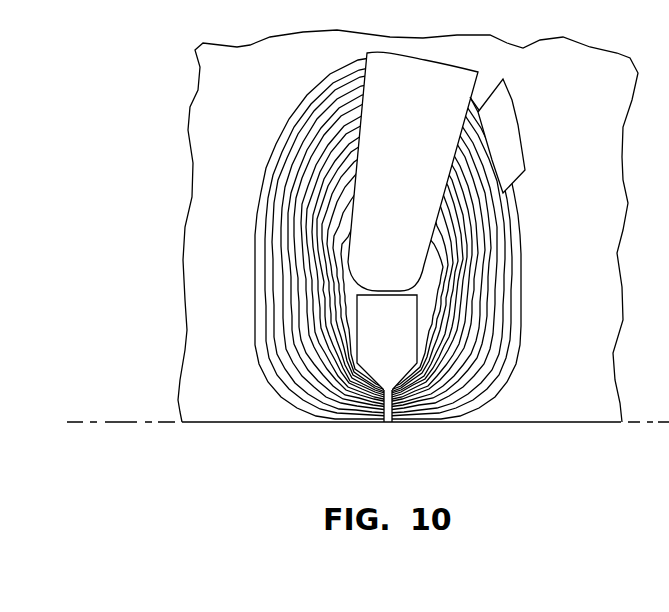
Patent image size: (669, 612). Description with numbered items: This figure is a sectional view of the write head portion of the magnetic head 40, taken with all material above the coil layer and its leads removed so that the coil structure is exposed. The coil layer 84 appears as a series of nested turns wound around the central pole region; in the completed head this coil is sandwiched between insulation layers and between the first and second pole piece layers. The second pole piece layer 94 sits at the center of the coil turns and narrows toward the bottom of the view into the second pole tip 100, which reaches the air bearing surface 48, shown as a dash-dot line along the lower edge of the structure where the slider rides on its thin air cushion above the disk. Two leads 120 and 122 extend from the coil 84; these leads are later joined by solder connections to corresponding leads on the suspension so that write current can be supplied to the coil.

The magnetic head 40 is at (536, 224).
The air bearing surface 48 is at (121, 422).
The coil layer 84 is at (495, 318).
The second pole piece layer 94 is at (398, 347).
The second pole tip 100 is at (388, 425).
The lead 120 is at (417, 168).
The lead 122 is at (512, 128).